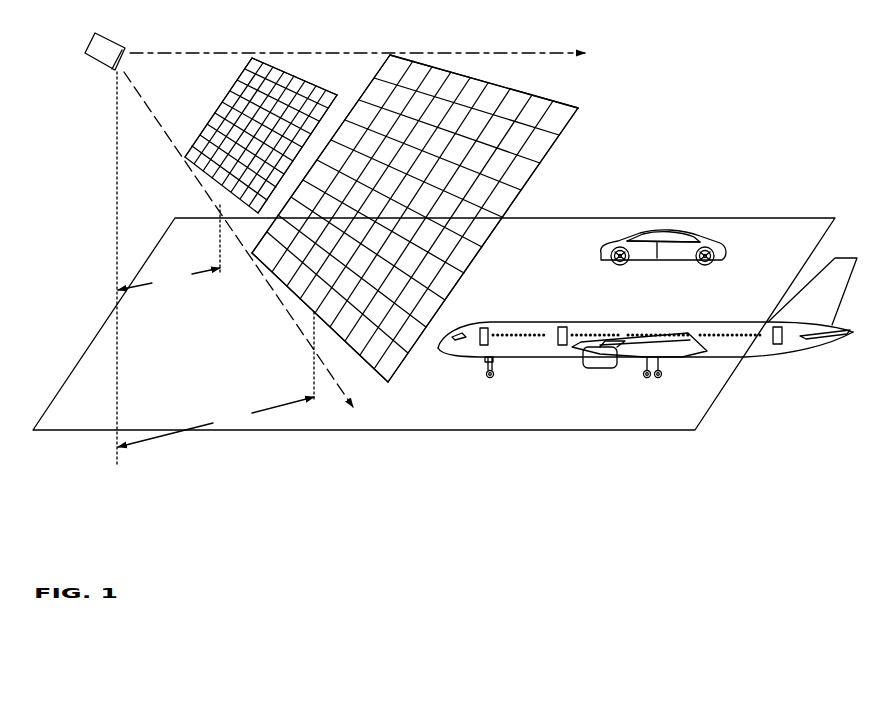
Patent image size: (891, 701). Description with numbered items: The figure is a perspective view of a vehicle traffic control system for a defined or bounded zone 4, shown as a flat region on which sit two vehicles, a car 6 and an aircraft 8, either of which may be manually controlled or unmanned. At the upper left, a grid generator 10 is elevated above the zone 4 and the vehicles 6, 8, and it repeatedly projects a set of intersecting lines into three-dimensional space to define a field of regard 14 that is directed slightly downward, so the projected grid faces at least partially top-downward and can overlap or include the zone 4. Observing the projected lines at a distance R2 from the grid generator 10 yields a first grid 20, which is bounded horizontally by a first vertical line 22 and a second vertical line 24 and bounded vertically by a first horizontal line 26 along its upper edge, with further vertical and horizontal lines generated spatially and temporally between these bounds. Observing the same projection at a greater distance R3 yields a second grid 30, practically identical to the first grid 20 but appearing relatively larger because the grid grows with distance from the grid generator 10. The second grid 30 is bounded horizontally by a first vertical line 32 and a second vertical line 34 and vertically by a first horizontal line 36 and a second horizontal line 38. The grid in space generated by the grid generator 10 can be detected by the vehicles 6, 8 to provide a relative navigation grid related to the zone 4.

The zone 4 is at (749, 216).
The car 6 is at (637, 245).
The aircraft 8 is at (675, 327).
The grid generator 10 is at (98, 63).
The field of regard 14 is at (150, 87).
The first grid 20 is at (304, 77).
The first vertical line 22 is at (241, 73).
The second vertical line 24 is at (335, 100).
The first horizontal line 26 is at (271, 64).
The second grid 30 is at (545, 160).
The first vertical line of the second grid 32 is at (251, 256).
The second vertical line of the second grid 34 is at (567, 126).
The first horizontal line of the second grid 36 is at (480, 80).
The second horizontal line of the second grid 38 is at (384, 381).
The distance R2 is at (169, 247).
The distance R3 is at (216, 379).